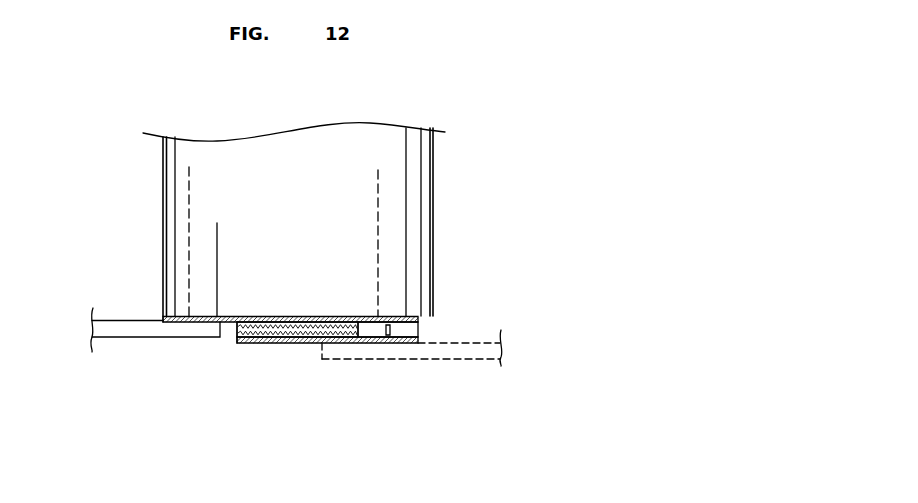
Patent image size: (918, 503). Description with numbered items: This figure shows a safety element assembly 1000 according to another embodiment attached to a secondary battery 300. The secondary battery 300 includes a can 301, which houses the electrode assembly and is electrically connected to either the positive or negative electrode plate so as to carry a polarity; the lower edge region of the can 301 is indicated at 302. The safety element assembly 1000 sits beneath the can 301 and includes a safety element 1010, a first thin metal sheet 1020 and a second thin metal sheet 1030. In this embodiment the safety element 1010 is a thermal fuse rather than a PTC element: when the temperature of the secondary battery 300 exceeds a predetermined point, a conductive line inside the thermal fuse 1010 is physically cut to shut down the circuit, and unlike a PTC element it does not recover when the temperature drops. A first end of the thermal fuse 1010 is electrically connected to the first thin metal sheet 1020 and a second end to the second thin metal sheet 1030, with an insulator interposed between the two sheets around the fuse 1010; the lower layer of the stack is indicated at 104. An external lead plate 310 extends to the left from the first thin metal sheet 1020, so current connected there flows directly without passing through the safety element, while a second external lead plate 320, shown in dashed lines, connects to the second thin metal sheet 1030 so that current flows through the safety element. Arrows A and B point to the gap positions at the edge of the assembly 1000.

The secondary battery 300 is at (393, 180).
The can 301 is at (162, 180).
The bottom flange of cell 302 is at (162, 318).
The external lead plate 310 is at (155, 337).
The external lead plate 320 is at (472, 361).
The safety element assembly 1000 is at (390, 382).
The safety element 1010 is at (390, 333).
The first thin metal sheet 1020 is at (418, 320).
The second thin metal sheet 1030 is at (298, 343).
The lower plate 104 is at (283, 343).
The gap A is at (226, 344).
The gap B is at (265, 345).